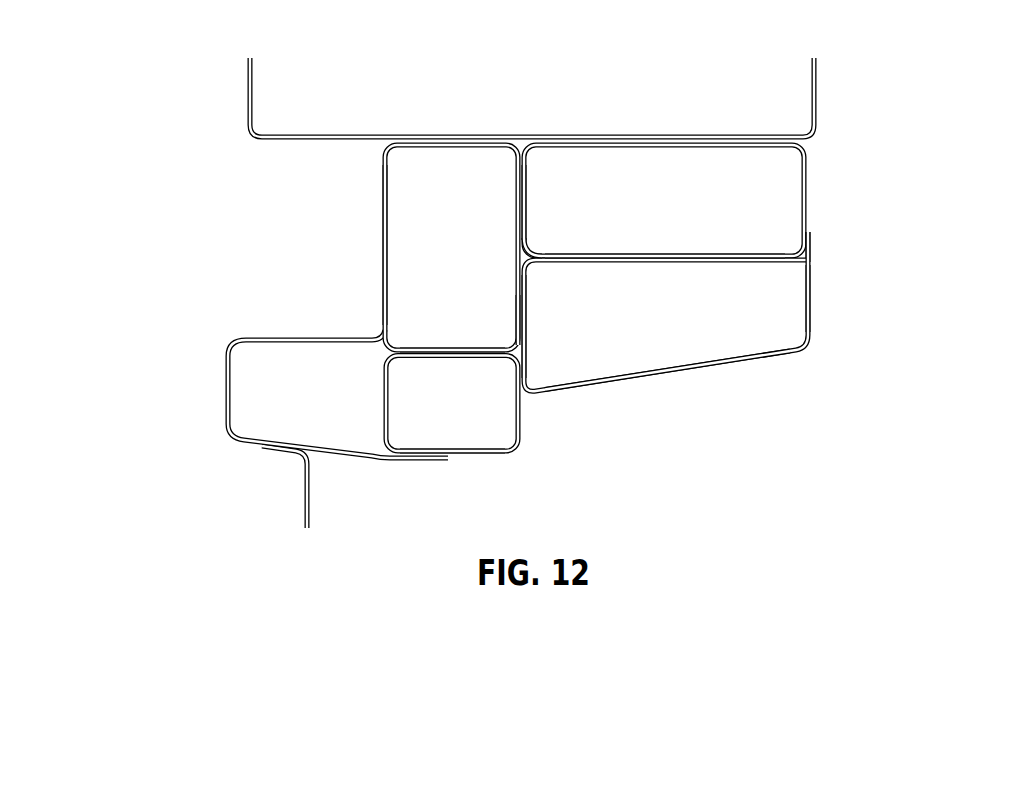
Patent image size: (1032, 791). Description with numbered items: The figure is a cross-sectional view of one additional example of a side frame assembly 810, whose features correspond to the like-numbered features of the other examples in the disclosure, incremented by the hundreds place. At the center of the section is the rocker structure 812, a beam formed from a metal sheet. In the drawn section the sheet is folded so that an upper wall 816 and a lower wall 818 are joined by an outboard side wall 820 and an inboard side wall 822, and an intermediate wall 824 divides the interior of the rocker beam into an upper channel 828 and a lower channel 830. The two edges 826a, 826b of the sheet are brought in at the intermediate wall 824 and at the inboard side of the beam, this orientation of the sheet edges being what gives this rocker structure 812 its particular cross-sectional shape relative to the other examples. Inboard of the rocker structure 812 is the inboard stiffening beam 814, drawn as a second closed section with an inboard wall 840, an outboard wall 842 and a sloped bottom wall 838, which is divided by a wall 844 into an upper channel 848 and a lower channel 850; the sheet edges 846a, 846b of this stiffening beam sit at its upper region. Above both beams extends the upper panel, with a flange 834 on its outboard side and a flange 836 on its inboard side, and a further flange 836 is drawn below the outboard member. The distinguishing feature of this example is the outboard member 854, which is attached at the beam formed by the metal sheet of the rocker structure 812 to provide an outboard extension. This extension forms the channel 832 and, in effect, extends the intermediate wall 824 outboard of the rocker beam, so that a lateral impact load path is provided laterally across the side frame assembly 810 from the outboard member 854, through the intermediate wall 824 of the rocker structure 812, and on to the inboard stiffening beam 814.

The side frame assembly 810 is at (474, 288).
The rocker structure 812 is at (513, 438).
The second frame member 814 is at (712, 305).
The top wall 816 is at (452, 135).
The bottom wall 818 is at (463, 460).
The left side wall 820 is at (382, 267).
The right side wall 822 is at (527, 279).
The intermediate wall 824 is at (439, 347).
The edge of the sheet 826a is at (410, 347).
The edge of the sheet 826b is at (527, 335).
The first channel 828 is at (466, 213).
The second channel 830 is at (466, 418).
The channel 832 is at (393, 332).
The top flange 834 is at (318, 135).
The flange 836 is at (664, 135).
The sloped bottom wall 838 is at (768, 359).
The inner wall 840 is at (528, 200).
The outer wall 842 is at (811, 299).
The partition wall 844 is at (698, 254).
The edge of the inboard stiffening beam 846a is at (548, 253).
The edge of the inboard stiffening beam 846b is at (812, 240).
The upper channel 848 is at (756, 220).
The lower channel 850 is at (756, 320).
The outboard member 854 is at (227, 398).